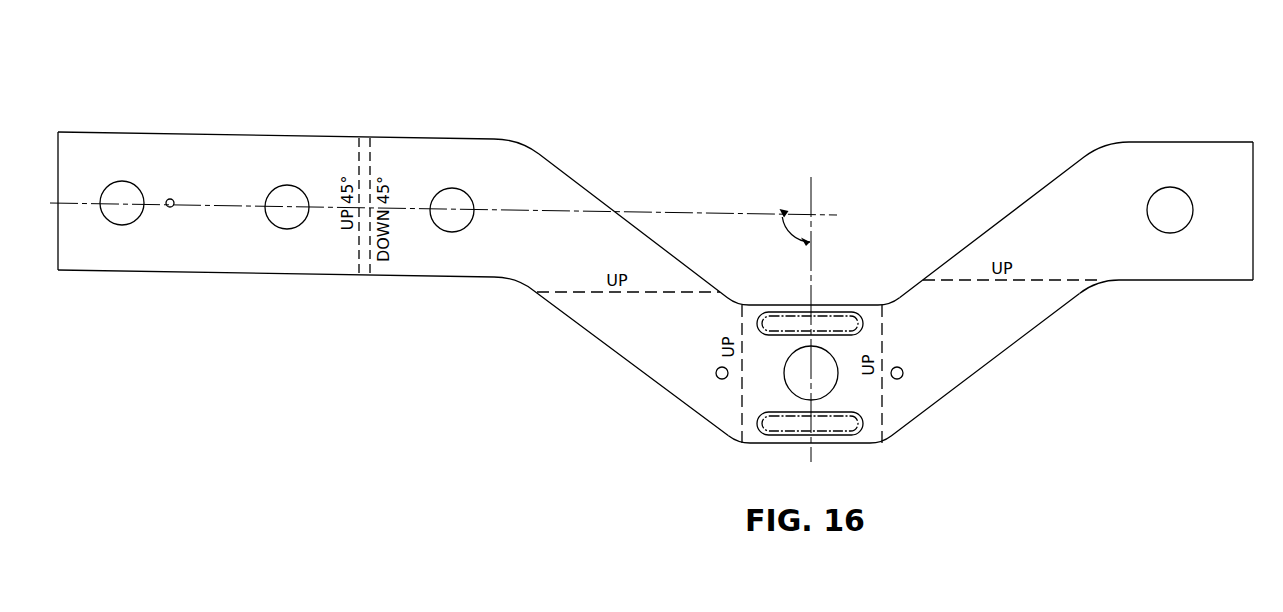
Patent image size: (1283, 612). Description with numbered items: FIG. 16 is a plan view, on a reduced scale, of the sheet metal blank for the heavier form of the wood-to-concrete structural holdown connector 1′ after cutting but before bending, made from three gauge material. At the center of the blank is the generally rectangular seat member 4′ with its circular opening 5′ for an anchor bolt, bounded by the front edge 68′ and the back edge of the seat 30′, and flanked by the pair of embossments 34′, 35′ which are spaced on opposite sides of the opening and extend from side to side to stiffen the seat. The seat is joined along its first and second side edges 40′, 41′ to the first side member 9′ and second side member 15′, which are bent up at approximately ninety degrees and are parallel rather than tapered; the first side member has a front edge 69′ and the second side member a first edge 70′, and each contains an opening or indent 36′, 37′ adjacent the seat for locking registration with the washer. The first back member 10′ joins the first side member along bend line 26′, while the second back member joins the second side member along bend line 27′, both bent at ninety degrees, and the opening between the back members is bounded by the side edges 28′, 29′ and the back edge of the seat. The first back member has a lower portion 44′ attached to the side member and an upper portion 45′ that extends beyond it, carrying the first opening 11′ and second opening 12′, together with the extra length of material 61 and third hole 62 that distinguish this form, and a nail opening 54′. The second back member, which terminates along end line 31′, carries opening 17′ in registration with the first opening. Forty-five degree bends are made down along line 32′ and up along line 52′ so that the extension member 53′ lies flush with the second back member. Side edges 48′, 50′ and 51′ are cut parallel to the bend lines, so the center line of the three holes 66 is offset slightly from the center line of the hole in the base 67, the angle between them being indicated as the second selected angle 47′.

The holdown connector 1′ is at (444, 131).
The seat member 4′ is at (749, 398).
The opening 5′ is at (830, 386).
The first side member 9′ is at (623, 343).
The first back member 10′ is at (335, 137).
The first opening 11′ is at (458, 200).
The second opening 12′ is at (287, 193).
The second side member 15′ is at (970, 339).
The opening 17′ is at (1180, 194).
The bend line 26′ is at (558, 290).
The bend line 27′ is at (1068, 278).
The side edge 28′ is at (573, 180).
The side edge 29′ is at (1055, 178).
The back edge of the seat 30′ is at (784, 303).
The end line 31′ is at (1255, 150).
The offset bend line 32′ is at (370, 280).
The embossment 34′ is at (862, 422).
The embossment 35′ is at (838, 315).
The opening or indent 36′ is at (718, 378).
The opening or indent 37′ is at (899, 367).
The first side edge of seat 40′ is at (740, 308).
The second side edge of seat 41′ is at (884, 325).
The lower portion of first back member 44′ is at (511, 201).
The upper portion of first back member 45′ is at (305, 261).
The second selected angle 47′ is at (783, 232).
The side edge 48′ is at (465, 280).
The side edge 50′ is at (1208, 282).
The side edge 51′ is at (1188, 142).
The bend line 52′ is at (358, 243).
The extension member 53′ is at (222, 249).
The nail opening 54′ is at (170, 199).
The extra length of material 61 is at (87, 147).
The third hole 62 is at (123, 185).
The center line of the three holes 66 is at (207, 203).
The center line of the hole in the base 67 is at (808, 458).
The front edge of seat 68′ is at (835, 445).
The front edge of first side member 69′ is at (592, 340).
The first edge of second side member 70′ is at (1007, 355).